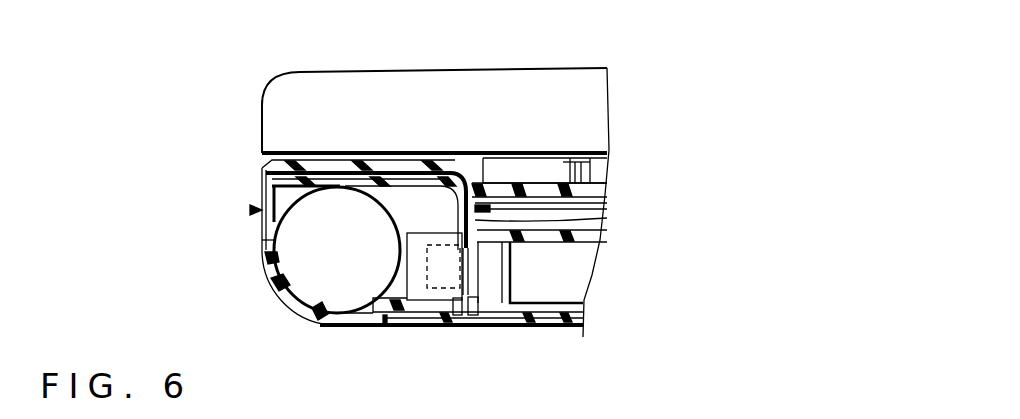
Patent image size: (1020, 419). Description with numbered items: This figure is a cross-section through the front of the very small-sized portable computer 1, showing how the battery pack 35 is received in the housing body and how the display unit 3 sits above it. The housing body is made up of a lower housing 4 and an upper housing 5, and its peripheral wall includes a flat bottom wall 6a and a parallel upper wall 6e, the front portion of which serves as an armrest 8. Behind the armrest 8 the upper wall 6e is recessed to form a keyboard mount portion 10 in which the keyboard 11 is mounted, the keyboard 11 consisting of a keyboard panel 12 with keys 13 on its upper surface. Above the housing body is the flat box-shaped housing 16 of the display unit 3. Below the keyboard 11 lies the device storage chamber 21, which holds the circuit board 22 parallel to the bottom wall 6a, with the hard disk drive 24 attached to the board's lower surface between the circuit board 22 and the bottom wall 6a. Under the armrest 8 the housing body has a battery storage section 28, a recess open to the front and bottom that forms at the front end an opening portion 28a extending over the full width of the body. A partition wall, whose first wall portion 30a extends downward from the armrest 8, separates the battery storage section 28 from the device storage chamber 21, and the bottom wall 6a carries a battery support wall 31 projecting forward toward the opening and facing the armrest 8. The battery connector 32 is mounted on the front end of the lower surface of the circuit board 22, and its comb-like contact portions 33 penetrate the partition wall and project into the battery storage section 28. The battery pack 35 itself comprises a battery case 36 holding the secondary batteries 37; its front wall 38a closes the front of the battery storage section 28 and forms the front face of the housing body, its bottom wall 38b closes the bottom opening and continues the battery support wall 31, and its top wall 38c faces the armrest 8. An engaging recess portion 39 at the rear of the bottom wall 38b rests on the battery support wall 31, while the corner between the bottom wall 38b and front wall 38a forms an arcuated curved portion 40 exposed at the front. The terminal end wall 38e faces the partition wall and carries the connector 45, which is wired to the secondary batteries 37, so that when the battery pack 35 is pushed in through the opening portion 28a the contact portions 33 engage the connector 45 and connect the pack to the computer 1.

The portable computer 1 is at (578, 66).
The display unit 3 is at (505, 82).
The lower housing 4 is at (585, 314).
The upper housing 5 is at (412, 160).
The bottom wall 6a is at (560, 328).
The upper wall 6e is at (263, 162).
The armrest 8 is at (386, 182).
The keyboard mount portion 10 is at (498, 158).
The keyboard 11 is at (605, 172).
The keyboard panel 12 is at (600, 172).
The keys 13 is at (583, 160).
The housing 16 is at (262, 127).
The device storage chamber 21 is at (535, 312).
The circuit board 22 is at (560, 243).
The hard disk drive 24 is at (572, 285).
The battery storage section 28 is at (435, 180).
The opening portion 28a is at (385, 308).
The first wall portion 30a is at (470, 213).
The battery support wall 31 is at (438, 300).
The battery connector 32 is at (492, 297).
The contact portions 33 is at (404, 262).
The battery pack 35 is at (252, 210).
The battery case 36 is at (307, 180).
The secondary batteries 37 is at (288, 283).
The front wall 38a is at (258, 253).
The bottom wall 38b is at (332, 325).
The top wall 38c is at (347, 180).
The terminal end wall 38e is at (452, 212).
The engaging recess portion 39 is at (392, 330).
The curved portion 40 is at (278, 297).
The connector 45 is at (450, 322).